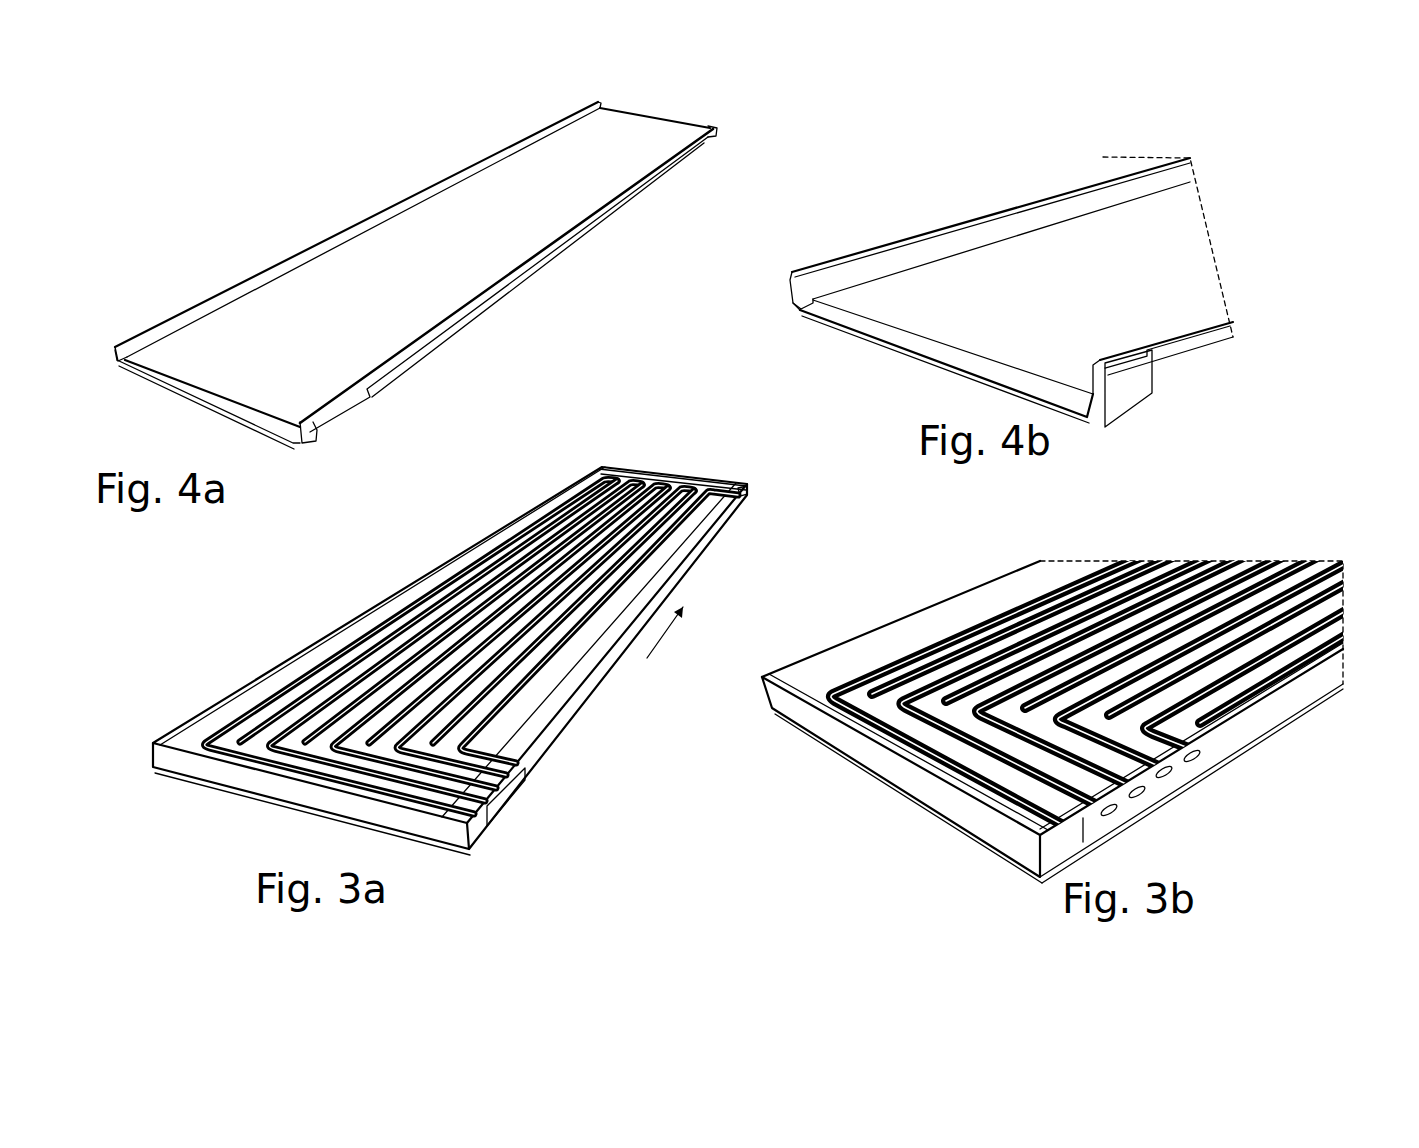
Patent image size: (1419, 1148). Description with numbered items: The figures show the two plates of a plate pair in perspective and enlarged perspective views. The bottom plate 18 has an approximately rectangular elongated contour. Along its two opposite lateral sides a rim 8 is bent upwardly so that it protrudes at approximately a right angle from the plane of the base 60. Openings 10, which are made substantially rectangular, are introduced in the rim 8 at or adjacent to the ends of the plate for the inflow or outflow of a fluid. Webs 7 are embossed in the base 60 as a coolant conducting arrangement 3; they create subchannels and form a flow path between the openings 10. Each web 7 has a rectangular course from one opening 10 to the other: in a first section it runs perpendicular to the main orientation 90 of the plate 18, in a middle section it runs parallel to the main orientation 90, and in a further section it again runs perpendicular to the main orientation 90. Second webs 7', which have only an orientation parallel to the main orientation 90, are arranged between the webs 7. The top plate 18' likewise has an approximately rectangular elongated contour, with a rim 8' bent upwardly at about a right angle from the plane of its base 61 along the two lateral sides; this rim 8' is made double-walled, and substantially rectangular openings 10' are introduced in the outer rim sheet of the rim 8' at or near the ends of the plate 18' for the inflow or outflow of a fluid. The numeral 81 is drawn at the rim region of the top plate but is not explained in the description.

In FIG. 3B, the coolant conducting arrangement 3 is at (871, 715).
In FIG. 3A, the web 7 is at (471, 647).
In FIG. 3B, the web 7 is at (1125, 655).
In FIG. 3A, the second web 7' is at (467, 612).
In FIG. 3B, the second web 7' is at (1145, 599).
In FIG. 3A, the rim 8 is at (636, 666).
In FIG. 3B, the rim 8 is at (1217, 763).
In FIG. 4B, the rim 8' is at (1157, 397).
In FIG. 3A, the opening 10 is at (668, 649).
In FIG. 3B, the opening 10 is at (1180, 784).
In FIG. 4A, the opening 10' is at (561, 282).
In FIG. 3A, the bottom plate 18 is at (450, 614).
In FIG. 3B, the bottom plate 18 is at (1058, 780).
In FIG. 4A, the top plate 18' is at (388, 275).
In FIG. 4B, the top plate 18' is at (945, 347).
In FIG. 3A, the base 60 is at (553, 690).
In FIG. 3B, the base 60 is at (978, 798).
In FIG. 4A, the base 61 is at (545, 160).
In FIG. 4B, the base 61 is at (1105, 210).
In FIG. 4A, the rail 81 is at (667, 172).
In FIG. 3A, the main orientation 90 is at (673, 633).